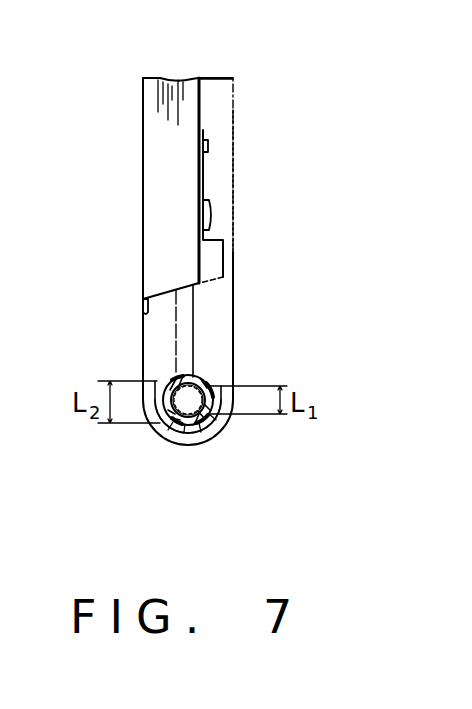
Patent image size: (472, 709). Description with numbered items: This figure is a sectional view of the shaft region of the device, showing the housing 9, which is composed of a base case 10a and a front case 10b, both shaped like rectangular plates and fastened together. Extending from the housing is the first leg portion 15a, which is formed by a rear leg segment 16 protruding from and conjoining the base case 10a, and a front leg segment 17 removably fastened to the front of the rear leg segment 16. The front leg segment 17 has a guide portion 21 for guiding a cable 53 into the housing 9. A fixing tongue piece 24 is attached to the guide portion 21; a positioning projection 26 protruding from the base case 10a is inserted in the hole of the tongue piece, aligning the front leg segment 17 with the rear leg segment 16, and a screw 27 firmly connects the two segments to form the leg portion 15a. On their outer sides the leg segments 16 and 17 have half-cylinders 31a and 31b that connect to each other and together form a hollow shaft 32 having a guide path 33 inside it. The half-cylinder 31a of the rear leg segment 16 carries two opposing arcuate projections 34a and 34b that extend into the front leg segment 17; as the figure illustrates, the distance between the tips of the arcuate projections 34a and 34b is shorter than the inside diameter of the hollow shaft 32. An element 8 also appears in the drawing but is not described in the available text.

The cover 8 is at (236, 125).
The housing 9 is at (141, 92).
The base case 10a is at (148, 122).
The front case 10b is at (215, 79).
The first leg portion 15a is at (234, 297).
The rear leg segment 16 is at (143, 305).
The front leg segment 17 is at (229, 327).
The guide portion 21 is at (226, 249).
The fixing tongue piece 24 is at (197, 172).
The positioning projection 26 is at (209, 143).
The screw 27 is at (212, 207).
The half-cylinder 31a is at (152, 434).
The half-cylinder 31b is at (242, 431).
The hollow shaft 32 is at (176, 374).
The guide path 33 is at (205, 380).
The arcuate projection 34a is at (215, 381).
The arcuate projection 34b is at (215, 443).
The cable 53 is at (176, 442).